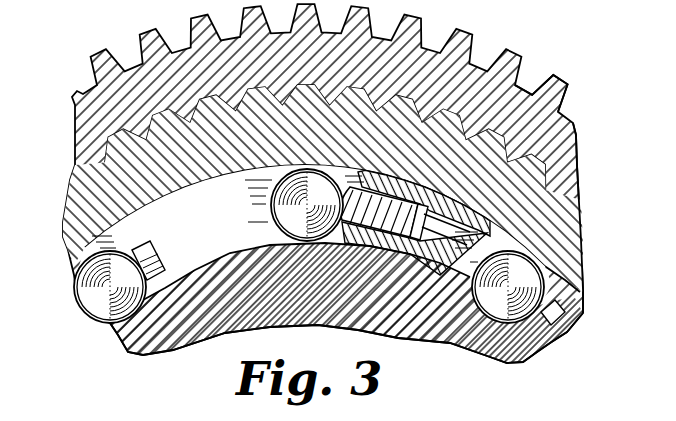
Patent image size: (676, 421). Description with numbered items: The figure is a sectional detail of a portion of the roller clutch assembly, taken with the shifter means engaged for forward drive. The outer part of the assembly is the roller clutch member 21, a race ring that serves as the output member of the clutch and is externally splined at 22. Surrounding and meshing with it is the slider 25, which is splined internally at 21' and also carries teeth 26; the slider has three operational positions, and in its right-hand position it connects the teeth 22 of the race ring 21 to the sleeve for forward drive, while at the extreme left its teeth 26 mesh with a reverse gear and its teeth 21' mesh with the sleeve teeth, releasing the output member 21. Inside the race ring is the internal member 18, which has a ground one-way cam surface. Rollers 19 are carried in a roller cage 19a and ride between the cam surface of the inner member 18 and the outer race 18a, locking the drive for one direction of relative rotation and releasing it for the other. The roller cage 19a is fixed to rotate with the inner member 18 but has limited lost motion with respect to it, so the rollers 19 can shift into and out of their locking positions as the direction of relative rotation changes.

The internal member 18 is at (491, 349).
The outer race 18a is at (545, 293).
The rollers 19 is at (87, 285).
The roller cage 19a is at (153, 217).
The roller clutch member 21 is at (340, 188).
The internal teeth 21' is at (481, 219).
The external splines 22 is at (78, 137).
The slider 25 is at (573, 132).
The teeth 26 is at (560, 97).